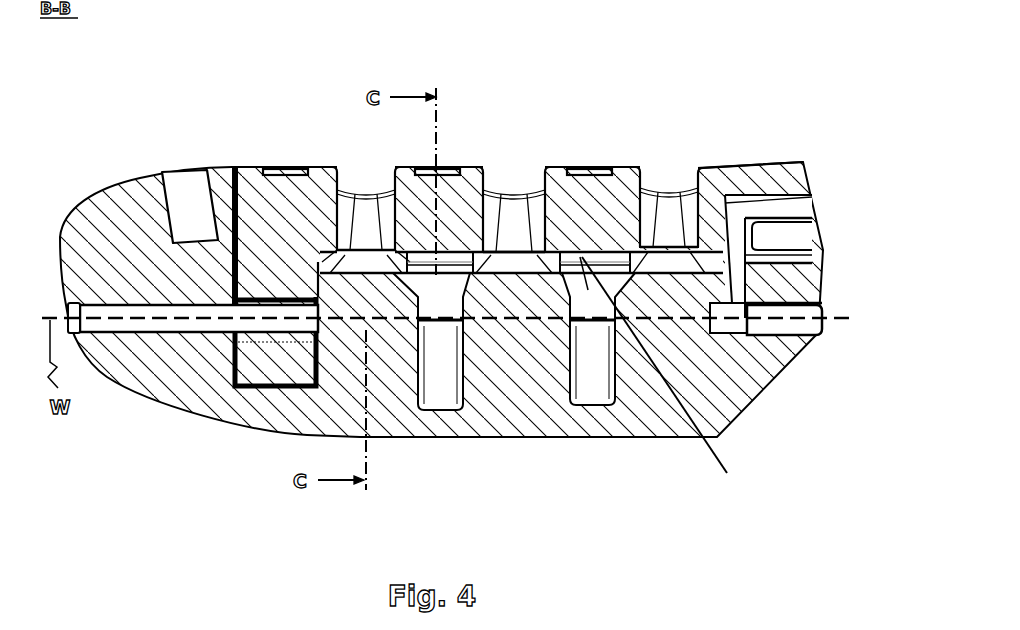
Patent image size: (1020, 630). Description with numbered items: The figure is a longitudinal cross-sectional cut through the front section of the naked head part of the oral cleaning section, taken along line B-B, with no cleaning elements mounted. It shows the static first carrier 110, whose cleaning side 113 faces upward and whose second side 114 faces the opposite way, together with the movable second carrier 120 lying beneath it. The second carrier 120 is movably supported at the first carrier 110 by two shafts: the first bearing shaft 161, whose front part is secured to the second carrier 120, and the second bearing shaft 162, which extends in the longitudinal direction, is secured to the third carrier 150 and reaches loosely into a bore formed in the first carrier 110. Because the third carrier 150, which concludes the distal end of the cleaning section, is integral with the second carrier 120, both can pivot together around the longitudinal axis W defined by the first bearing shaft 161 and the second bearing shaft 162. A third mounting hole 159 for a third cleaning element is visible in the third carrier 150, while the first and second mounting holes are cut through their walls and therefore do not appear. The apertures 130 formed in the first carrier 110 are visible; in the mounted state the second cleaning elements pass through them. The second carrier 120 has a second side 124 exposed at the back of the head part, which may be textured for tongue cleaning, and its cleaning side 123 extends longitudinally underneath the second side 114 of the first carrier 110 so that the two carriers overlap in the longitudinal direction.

The first carrier 110 is at (615, 190).
The cleaning side 113 is at (743, 154).
The second side 114 is at (663, 379).
The second carrier 120 is at (537, 387).
The cleaning side 123 is at (510, 270).
The second side 124 is at (524, 459).
The apertures 130 is at (352, 164).
The third carrier 150 is at (112, 217).
The third mounting hole 159 is at (190, 180).
The first bearing shaft 161 is at (790, 323).
The second bearing shaft 162 is at (180, 320).